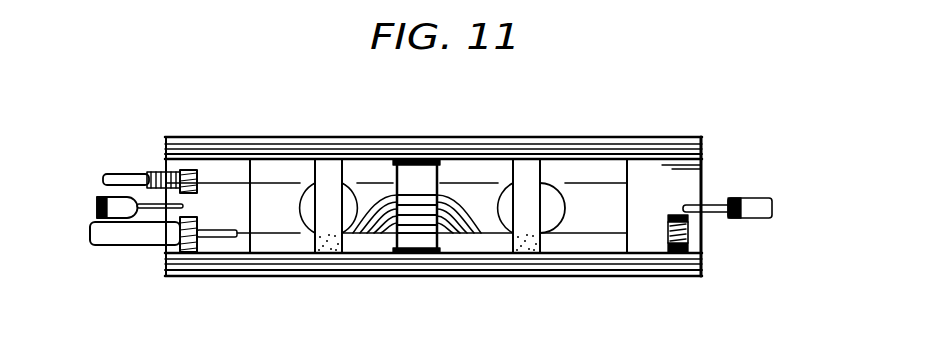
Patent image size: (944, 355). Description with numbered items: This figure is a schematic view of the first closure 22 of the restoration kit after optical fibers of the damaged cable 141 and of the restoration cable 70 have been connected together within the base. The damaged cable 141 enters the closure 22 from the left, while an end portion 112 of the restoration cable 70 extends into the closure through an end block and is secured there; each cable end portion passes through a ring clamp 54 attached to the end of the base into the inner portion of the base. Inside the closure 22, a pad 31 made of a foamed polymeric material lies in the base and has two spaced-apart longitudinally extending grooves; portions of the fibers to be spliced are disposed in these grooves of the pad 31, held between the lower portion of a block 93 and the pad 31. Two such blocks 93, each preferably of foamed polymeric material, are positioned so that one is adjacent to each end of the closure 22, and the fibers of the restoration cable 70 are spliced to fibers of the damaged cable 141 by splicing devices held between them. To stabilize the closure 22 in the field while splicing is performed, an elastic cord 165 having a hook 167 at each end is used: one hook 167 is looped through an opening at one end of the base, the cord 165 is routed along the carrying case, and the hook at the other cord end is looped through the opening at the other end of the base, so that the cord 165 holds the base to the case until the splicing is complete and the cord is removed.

The closure 22 is at (440, 135).
The pad 31 is at (287, 170).
The restoration cable 70 is at (133, 171).
The cable 141 is at (130, 246).
The block 93 is at (522, 253).
The end portion 112 is at (653, 243).
The ring clamp 54 is at (687, 253).
The hook 167 is at (710, 202).
The elastic cord 165 is at (753, 218).